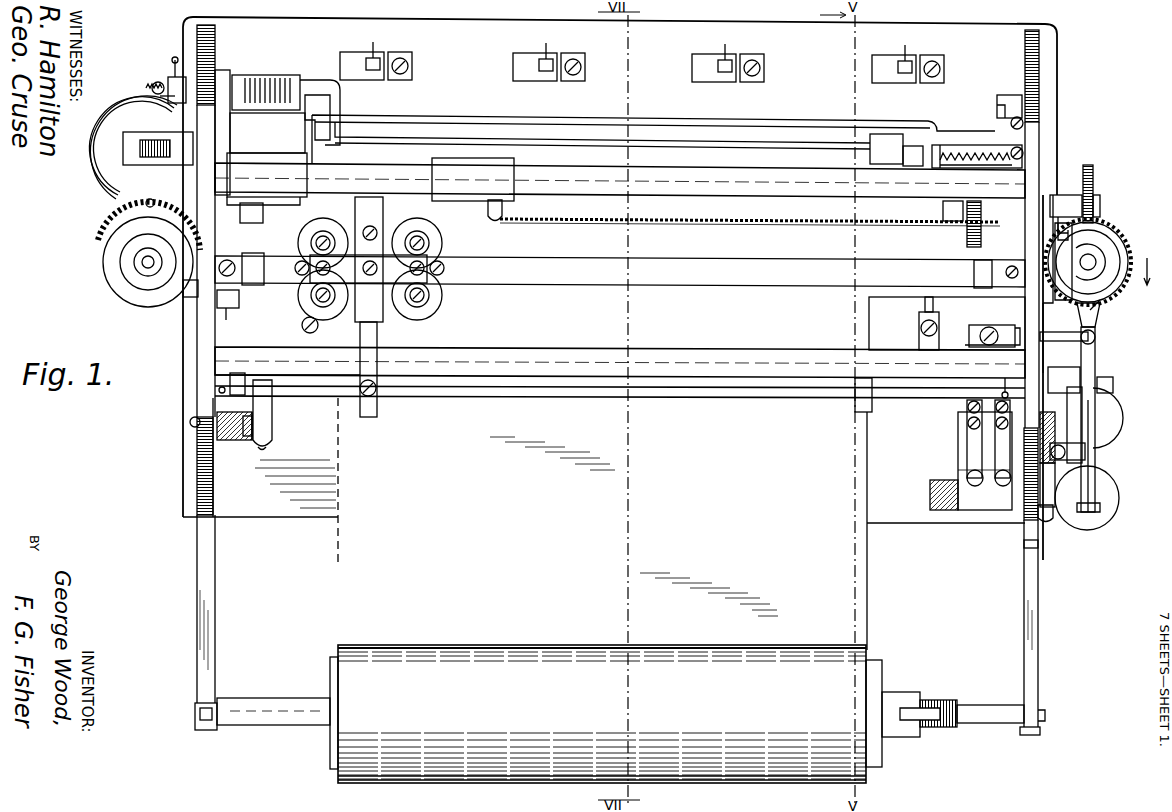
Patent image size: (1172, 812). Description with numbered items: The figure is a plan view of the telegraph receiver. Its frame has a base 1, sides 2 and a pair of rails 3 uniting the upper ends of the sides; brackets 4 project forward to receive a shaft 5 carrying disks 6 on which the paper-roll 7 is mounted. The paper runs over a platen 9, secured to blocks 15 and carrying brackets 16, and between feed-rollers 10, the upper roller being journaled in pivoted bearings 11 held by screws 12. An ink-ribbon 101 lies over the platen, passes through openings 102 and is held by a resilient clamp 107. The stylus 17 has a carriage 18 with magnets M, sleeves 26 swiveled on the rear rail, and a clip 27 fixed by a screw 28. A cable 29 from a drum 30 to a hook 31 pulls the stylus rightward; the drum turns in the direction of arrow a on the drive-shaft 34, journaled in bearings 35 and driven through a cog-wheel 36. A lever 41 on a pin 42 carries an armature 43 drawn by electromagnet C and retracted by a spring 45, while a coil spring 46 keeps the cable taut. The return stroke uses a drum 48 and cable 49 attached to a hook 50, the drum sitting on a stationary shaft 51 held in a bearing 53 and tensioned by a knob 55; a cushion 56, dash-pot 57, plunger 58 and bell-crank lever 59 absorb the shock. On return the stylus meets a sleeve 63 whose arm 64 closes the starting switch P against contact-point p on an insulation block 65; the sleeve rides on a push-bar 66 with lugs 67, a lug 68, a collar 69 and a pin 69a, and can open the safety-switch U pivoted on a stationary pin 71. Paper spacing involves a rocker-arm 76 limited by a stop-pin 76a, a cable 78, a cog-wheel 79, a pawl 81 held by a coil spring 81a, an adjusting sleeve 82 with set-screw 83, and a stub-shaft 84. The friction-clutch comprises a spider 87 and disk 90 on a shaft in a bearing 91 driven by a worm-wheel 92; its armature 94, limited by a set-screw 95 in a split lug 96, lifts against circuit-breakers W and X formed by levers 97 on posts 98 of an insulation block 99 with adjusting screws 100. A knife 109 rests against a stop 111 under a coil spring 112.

The base 1 is at (312, 517).
The sides 2 is at (198, 470).
The rails 3 is at (620, 270).
The brackets 4 is at (197, 612).
The shaft 5 is at (282, 700).
The disks 6 is at (333, 663).
The paper-roll 7 is at (606, 714).
The platen 9 is at (888, 297).
The feed-rollers 10 is at (655, 122).
The bearings 11 is at (228, 88).
The screws 12 is at (250, 78).
The blocks 15 is at (1002, 310).
The brackets 16 is at (300, 326).
The stylus 17 is at (370, 306).
The carriage 18 is at (369, 259).
The sleeves 26 is at (370, 179).
The clip 27 is at (370, 418).
The screw 28 is at (378, 400).
The cable 29 is at (742, 226).
The drum 30 is at (1130, 252).
The hook 31 is at (496, 224).
The drive-shaft 34 is at (1098, 250).
The bearings 35 is at (1075, 275).
The cog-wheel 36 is at (1124, 290).
The lever 41 is at (1096, 360).
The pin 42 is at (1114, 385).
The armature 43 is at (1100, 522).
The retractile spring 45 is at (1096, 340).
The coil spring 46 is at (1096, 336).
The drum 48 is at (100, 262).
The cable 49 is at (172, 205).
The hook 50 is at (262, 215).
The stationary shaft 51 is at (137, 266).
The bearing 53 is at (186, 292).
The knob 55 is at (140, 283).
The cushion 56 is at (222, 148).
The dash-pot 57 is at (100, 170).
The plunger 58 is at (100, 142).
The bell-crank lever 59 is at (159, 148).
The sleeve 63 is at (287, 413).
The arm 64 is at (273, 443).
The block of insulation 65 is at (215, 424).
The push-bar 66 is at (583, 398).
The lugs 67 is at (355, 383).
The lug 68 is at (862, 398).
The collar 69 is at (228, 383).
The pin 69a is at (991, 375).
The stationary pin 71 is at (1105, 448).
The rocker-arm 76 is at (162, 78).
The stop-pin 76a is at (160, 97).
The cable 78 is at (150, 88).
The cog-wheel 79 is at (105, 210).
The pawl 81 is at (312, 118).
The coil spring 81a is at (305, 82).
The sleeve 82 is at (166, 82).
The set-screw 83 is at (174, 58).
The stub-shaft 84 is at (148, 240).
The spider 87 is at (965, 242).
The disk 90 is at (974, 254).
The bearing 91 is at (1075, 217).
The worm-wheel 92 is at (1088, 175).
The armature 94 is at (970, 337).
The set-screw 95 is at (981, 361).
The split lug 96 is at (985, 347).
The levers 97 is at (965, 466).
The posts 98 is at (995, 480).
The block of insulation 99 is at (968, 512).
The screws 100 is at (966, 420).
The ink-ribbon 101 is at (620, 271).
The openings 102 is at (620, 272).
The resilient clamp 107 is at (253, 287).
The knife 109 is at (742, 122).
The stop 111 is at (976, 146).
The coil spring 112 is at (992, 168).
The magnets M is at (300, 252).
The circuit-breaker W is at (965, 437).
The circuit-breaker X is at (995, 450).
The safety-switch U is at (1096, 413).
The electromagnet C is at (1112, 480).
The arrow a is at (1154, 271).
The contact-point p is at (246, 437).
The starting switch P is at (250, 440).